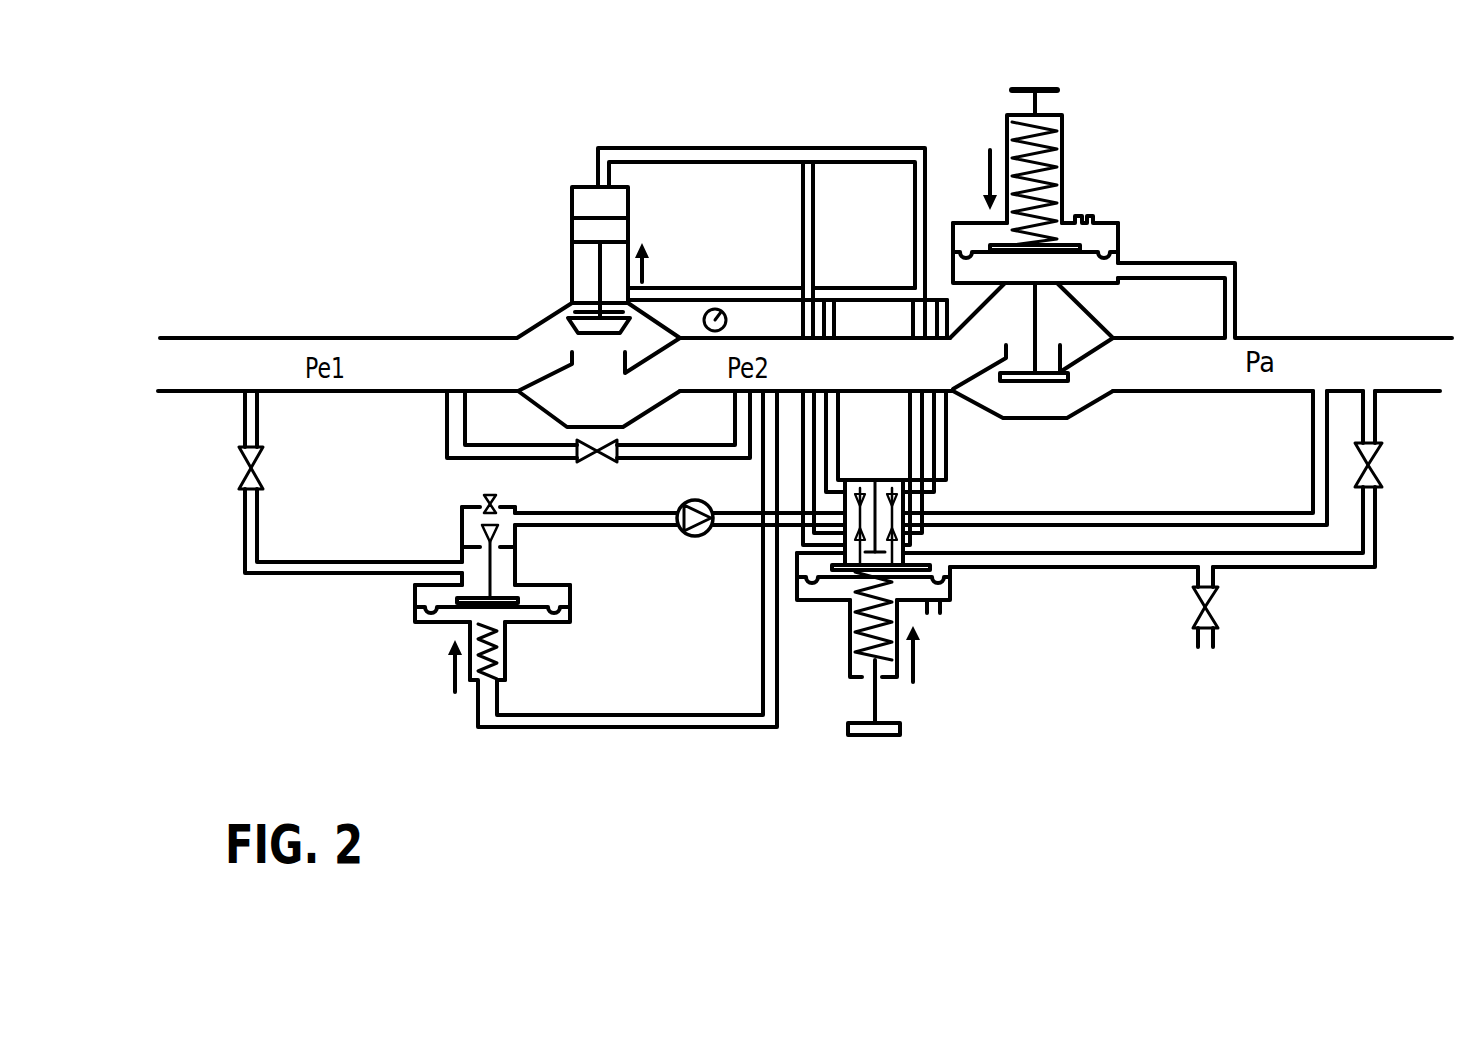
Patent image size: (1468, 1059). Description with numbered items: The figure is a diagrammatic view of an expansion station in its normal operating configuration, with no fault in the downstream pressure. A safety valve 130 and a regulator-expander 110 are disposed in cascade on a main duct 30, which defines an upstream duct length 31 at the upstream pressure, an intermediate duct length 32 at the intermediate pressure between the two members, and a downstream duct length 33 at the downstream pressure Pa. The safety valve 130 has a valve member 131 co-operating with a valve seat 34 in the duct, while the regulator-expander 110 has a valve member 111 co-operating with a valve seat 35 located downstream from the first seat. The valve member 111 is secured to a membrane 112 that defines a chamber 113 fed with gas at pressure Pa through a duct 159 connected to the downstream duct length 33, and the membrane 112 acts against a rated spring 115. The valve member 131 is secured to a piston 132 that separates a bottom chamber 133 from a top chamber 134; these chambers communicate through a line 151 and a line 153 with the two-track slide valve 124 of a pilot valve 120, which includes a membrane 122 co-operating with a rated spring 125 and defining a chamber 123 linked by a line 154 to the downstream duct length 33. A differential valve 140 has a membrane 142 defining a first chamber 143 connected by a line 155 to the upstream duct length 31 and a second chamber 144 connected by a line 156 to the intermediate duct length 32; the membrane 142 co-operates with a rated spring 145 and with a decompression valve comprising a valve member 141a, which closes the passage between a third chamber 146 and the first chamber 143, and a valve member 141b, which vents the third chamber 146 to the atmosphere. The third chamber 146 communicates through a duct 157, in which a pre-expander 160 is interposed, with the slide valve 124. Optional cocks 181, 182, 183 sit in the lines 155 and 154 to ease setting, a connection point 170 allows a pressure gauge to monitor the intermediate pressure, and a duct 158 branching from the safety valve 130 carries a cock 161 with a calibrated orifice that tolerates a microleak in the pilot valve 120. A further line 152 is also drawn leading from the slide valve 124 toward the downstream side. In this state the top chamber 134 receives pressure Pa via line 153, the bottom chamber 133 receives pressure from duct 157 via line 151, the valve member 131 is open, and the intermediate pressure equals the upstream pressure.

The main duct 30 is at (1322, 330).
The upstream duct length 31 is at (288, 337).
The intermediate duct length 32 is at (851, 340).
The downstream duct length 33 is at (1212, 393).
The valve seat 34 is at (547, 398).
The valve seat 35 is at (1065, 352).
The regulator-expander 110 is at (1090, 275).
The valve member 111 is at (1037, 382).
The membrane 112 is at (1110, 224).
The chamber 113 is at (1075, 270).
The rated spring 115 is at (1050, 152).
The pilot valve 120 is at (906, 630).
The membrane 122 is at (945, 592).
The chamber 123 is at (932, 563).
The two-track slide valve 124 is at (866, 476).
The rated spring 125 is at (860, 656).
The safety valve 130 is at (702, 262).
The valve member 131 is at (577, 328).
The piston 132 is at (628, 231).
The bottom chamber 133 is at (583, 281).
The top chamber 134 is at (618, 198).
The differential valve 140 is at (478, 582).
The valve member 141a is at (500, 532).
The valve member 141b is at (480, 499).
The membrane 142 is at (437, 610).
The first chamber 143 is at (470, 574).
The second chamber 144 is at (535, 615).
The rated spring 145 is at (505, 660).
The third chamber 146 is at (462, 517).
The line 151 is at (862, 286).
The control line 152 is at (1050, 513).
The line 153 is at (723, 147).
The line 154 is at (1108, 568).
The line 155 is at (275, 573).
The line 156 is at (608, 728).
The duct 157 is at (606, 528).
The duct 158 is at (658, 445).
The duct 159 is at (1220, 262).
The pre-expander 160 is at (700, 538).
The cock 161 is at (606, 464).
The connection point for a pressure gauge 170 is at (727, 320).
The cock 181 is at (240, 460).
The cock 182 is at (1382, 462).
The cock 183 is at (1215, 620).